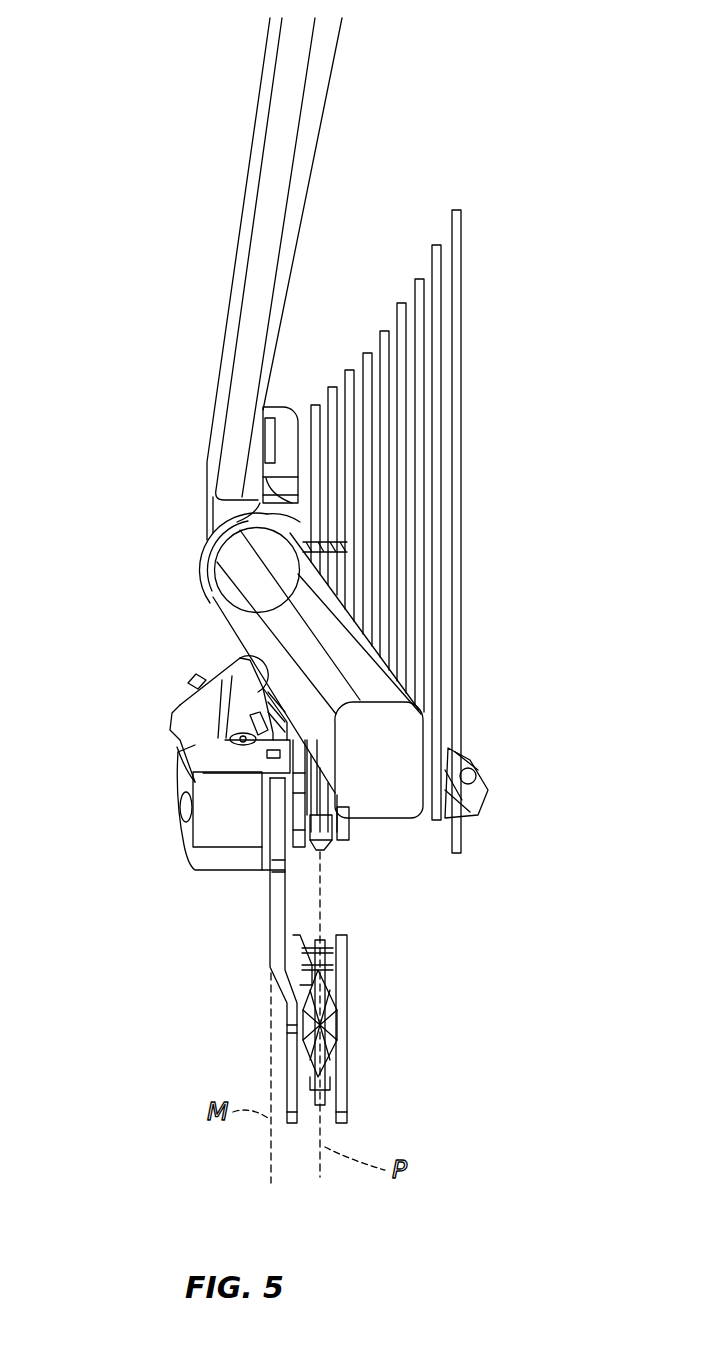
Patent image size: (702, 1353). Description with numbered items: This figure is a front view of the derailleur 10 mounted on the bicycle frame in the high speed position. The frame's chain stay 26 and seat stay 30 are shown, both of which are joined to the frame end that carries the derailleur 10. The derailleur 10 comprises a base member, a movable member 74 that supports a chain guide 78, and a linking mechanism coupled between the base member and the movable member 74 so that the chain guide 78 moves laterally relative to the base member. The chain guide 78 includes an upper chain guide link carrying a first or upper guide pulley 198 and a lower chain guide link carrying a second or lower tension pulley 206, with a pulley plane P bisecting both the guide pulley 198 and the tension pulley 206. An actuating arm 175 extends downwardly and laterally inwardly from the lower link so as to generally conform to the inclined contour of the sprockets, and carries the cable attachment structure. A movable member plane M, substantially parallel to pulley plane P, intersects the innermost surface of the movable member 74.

The seat stay 30 is at (255, 182).
The chain stay 26 is at (248, 620).
The derailleur 10 is at (95, 713).
The movable member 74 is at (162, 810).
The chain guide 78 is at (245, 930).
The guide pulley 198 is at (333, 842).
The tension pulley 206 is at (347, 1020).
The actuating arm 175 is at (480, 770).